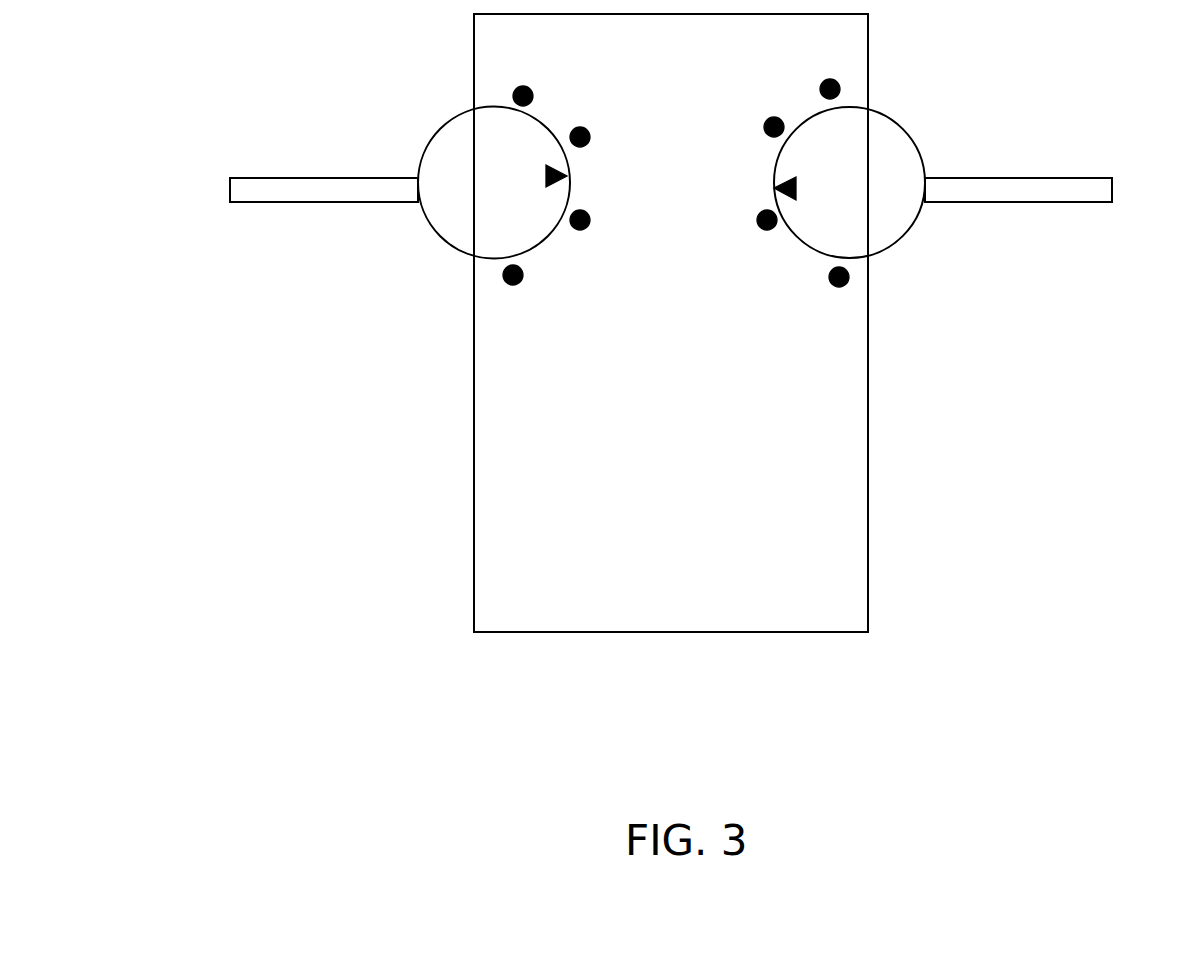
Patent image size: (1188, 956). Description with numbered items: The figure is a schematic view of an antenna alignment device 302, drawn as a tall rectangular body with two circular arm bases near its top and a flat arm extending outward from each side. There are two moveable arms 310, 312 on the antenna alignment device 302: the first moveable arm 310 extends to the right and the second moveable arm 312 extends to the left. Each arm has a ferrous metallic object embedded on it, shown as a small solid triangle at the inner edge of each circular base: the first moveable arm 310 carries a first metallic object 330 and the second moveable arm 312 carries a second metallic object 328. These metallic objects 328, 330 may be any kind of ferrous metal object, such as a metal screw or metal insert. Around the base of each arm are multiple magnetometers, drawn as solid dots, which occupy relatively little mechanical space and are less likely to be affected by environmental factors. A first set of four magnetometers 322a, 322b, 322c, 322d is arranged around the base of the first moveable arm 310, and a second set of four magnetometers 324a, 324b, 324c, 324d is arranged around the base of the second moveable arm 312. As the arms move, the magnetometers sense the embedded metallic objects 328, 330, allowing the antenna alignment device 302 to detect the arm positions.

The antenna alignment device 302 is at (706, 749).
The first moveable arm 310 is at (1055, 183).
The second moveable arm 312 is at (285, 184).
The magnetometer 322a is at (809, 100).
The magnetometer 322b is at (763, 137).
The magnetometer 322c is at (753, 231).
The magnetometer 322d is at (819, 287).
The magnetometer 324a is at (593, 109).
The magnetometer 324b is at (643, 155).
The magnetometer 324c is at (641, 241).
The magnetometer 324d is at (575, 306).
The second metallic object 328 is at (535, 191).
The first metallic object 330 is at (841, 202).